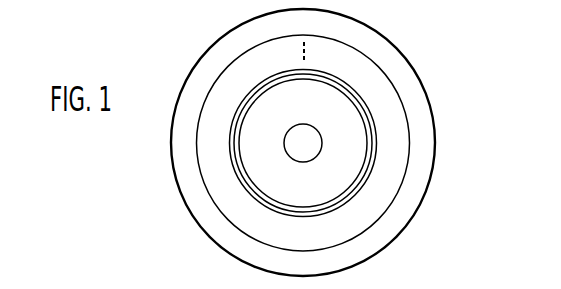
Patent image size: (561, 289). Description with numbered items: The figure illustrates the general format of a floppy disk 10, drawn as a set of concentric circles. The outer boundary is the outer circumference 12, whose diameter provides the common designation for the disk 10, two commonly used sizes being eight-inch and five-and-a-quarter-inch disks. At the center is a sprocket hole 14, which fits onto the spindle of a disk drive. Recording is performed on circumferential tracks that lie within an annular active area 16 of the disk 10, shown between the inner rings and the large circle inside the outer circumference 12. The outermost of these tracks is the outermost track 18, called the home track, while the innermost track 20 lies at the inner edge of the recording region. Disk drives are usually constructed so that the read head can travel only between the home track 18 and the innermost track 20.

The floppy disk 10 is at (293, 142).
The outer circumference 12 is at (180, 196).
The sprocket hole 14 is at (298, 126).
The active area 16 is at (410, 142).
The outermost track 18 is at (410, 153).
The innermost track 20 is at (362, 165).